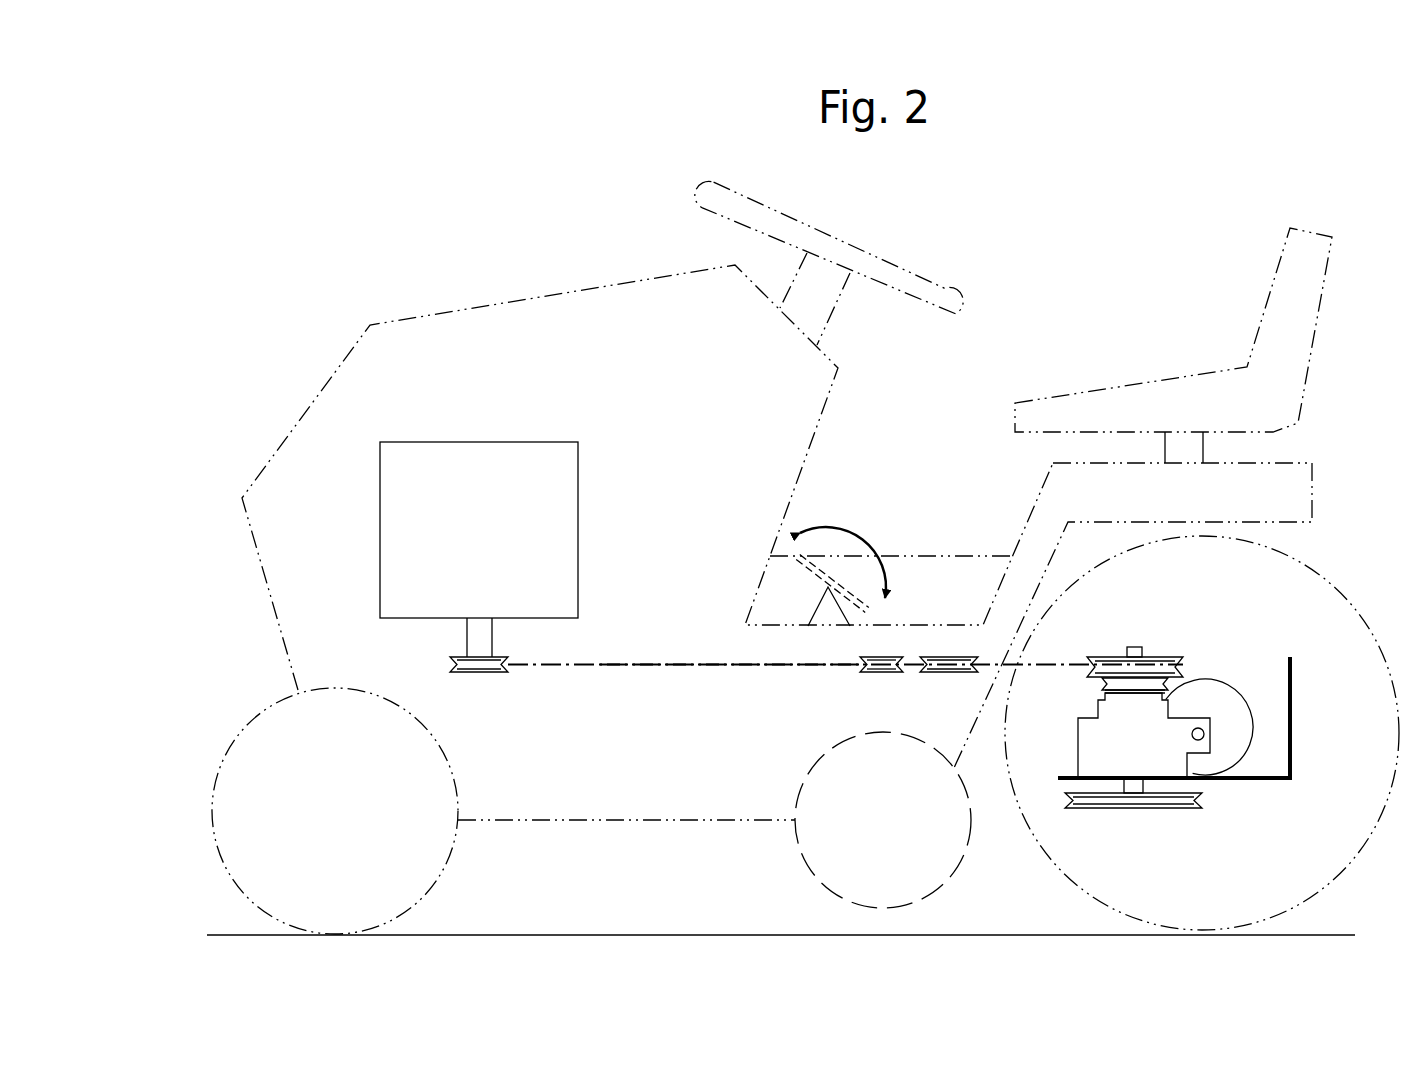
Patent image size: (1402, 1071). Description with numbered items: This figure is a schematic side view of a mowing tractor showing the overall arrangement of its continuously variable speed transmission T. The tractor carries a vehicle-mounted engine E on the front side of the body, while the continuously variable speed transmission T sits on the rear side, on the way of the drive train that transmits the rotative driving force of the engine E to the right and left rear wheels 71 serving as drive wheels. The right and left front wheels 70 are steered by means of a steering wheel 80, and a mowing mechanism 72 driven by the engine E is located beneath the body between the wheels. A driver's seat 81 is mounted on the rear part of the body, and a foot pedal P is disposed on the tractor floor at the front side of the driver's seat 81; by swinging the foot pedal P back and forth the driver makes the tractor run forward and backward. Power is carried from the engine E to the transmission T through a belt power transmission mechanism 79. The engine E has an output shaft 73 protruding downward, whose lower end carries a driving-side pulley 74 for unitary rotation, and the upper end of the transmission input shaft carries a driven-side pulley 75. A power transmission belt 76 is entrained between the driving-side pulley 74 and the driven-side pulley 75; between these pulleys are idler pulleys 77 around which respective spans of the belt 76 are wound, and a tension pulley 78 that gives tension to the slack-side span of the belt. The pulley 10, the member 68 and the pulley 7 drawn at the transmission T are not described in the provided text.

The steering wheel 80 is at (768, 198).
The driver's seat 81 is at (1143, 382).
The engine E is at (483, 440).
The foot pedal P is at (868, 612).
The output shaft 73 is at (467, 640).
The driving-side pulley 74 is at (483, 672).
The belt power transmission mechanism 79 is at (641, 658).
The power transmission belt 76 is at (707, 667).
The idler pulley 77 is at (880, 675).
The tension pulley 78 is at (953, 675).
The driven-side pulley 75 is at (1180, 660).
The pulley 10 is at (1100, 683).
The continuously variable speed transmission T is at (1077, 745).
The control arm 68 is at (1203, 740).
The pulley 7 is at (1155, 795).
The front wheel 70 is at (455, 850).
The mowing mechanism 72 is at (800, 848).
The rear wheel 71 is at (1020, 850).